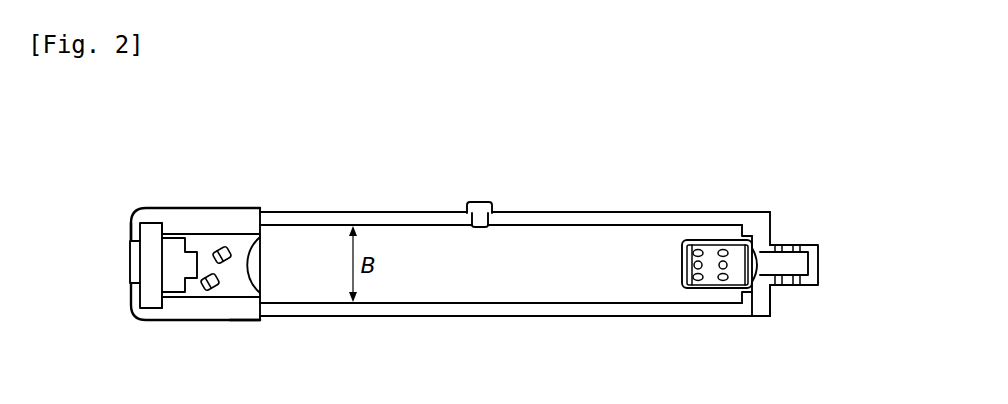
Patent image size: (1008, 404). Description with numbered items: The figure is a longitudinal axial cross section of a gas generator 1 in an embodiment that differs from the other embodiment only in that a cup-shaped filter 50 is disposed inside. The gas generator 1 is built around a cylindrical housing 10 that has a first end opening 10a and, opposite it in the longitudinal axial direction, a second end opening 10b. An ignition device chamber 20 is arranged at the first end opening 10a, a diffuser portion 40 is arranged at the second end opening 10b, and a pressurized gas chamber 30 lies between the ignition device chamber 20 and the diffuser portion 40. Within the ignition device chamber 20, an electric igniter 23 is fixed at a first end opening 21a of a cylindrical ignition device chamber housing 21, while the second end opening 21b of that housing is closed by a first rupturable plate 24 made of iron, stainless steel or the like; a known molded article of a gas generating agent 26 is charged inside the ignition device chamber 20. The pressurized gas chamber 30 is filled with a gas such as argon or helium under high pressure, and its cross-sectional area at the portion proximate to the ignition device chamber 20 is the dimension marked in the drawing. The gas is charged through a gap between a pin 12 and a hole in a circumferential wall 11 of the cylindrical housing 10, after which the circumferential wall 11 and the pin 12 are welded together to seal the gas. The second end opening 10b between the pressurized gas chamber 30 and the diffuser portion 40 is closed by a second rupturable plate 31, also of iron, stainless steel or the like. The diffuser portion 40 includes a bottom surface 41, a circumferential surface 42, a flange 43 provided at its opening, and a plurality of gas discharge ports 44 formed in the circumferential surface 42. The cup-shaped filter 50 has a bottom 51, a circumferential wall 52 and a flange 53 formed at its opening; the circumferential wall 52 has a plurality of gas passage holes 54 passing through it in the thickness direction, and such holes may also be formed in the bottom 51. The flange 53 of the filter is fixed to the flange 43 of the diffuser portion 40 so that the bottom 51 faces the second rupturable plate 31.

The gas generator 1 is at (548, 194).
The cylindrical housing 10 is at (382, 213).
The first end opening 10a is at (259, 216).
The second end opening 10b is at (739, 232).
The circumferential wall 11 is at (585, 317).
The pin 12 is at (478, 201).
The ignition device chamber 20 is at (228, 290).
The ignition device chamber housing 21 is at (203, 212).
The first end opening of ignition device chamber housing 21a is at (130, 238).
The second end opening of ignition device chamber housing 21b is at (262, 313).
The electric igniter 23 is at (170, 283).
The first rupturable plate 24 is at (254, 258).
The gas generating agent 26 is at (218, 250).
The pressurized gas chamber 30 is at (465, 280).
The second rupturable plate 31 is at (763, 253).
The diffuser portion 40 is at (819, 242).
The bottom surface 41 is at (819, 270).
The circumferential surface 42 is at (787, 286).
The flange 43 is at (762, 311).
The gas discharge ports 44 is at (795, 243).
The cup-shaped filter 50 is at (677, 257).
The bottom 51 is at (681, 278).
The circumferential wall 52 is at (715, 290).
The flange 53 is at (737, 236).
The gas passage holes 54 is at (702, 242).